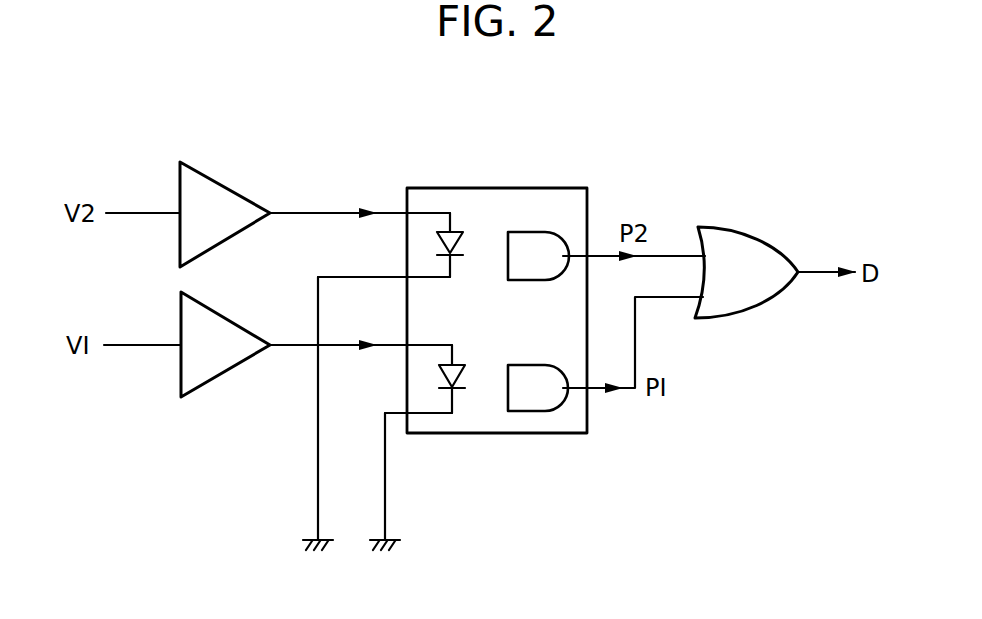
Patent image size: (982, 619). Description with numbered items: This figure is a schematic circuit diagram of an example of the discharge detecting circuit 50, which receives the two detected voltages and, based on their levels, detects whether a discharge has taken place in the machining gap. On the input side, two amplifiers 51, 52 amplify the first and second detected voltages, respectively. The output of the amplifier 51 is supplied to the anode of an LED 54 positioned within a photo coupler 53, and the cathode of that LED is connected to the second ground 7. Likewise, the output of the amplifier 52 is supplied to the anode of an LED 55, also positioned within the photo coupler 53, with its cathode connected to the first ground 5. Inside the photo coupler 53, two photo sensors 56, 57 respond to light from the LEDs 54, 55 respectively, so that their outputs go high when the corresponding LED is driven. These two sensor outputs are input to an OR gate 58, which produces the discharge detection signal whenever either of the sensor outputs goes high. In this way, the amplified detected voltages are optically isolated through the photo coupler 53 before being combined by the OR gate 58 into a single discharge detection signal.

The discharge detecting circuit 50 is at (537, 158).
The amplifier 51 is at (226, 360).
The amplifier 52 is at (225, 197).
The photo coupler 53 is at (548, 435).
The LED 54 is at (457, 365).
The LED 55 is at (453, 235).
The photo sensor 56 is at (528, 375).
The photo sensor 57 is at (523, 243).
The OR gate 58 is at (755, 245).
The first ground 5 is at (311, 540).
The second ground 7 is at (392, 540).